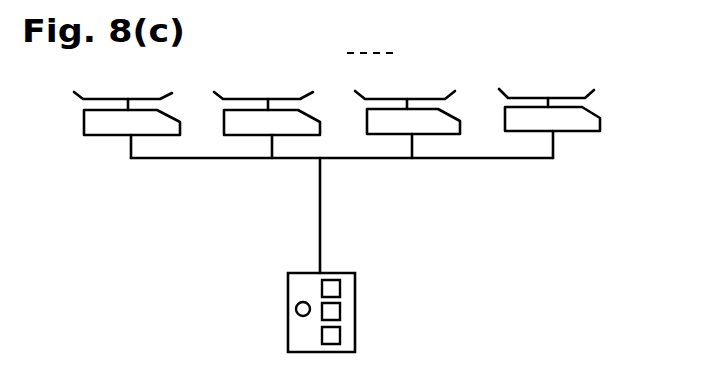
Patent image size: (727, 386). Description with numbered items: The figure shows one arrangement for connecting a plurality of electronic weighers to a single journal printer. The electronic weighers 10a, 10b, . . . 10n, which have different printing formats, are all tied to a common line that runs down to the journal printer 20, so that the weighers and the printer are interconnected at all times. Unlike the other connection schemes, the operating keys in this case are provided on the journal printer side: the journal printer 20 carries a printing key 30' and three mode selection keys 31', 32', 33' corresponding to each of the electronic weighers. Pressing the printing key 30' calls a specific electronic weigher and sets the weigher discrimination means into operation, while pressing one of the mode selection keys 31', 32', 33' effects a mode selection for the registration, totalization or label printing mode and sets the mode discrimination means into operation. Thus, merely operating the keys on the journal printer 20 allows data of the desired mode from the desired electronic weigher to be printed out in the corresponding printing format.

The electronic weigher 10a is at (143, 99).
The electronic weigher 10b is at (281, 99).
The electronic weigher 10n is at (532, 97).
The journal printer 20 is at (288, 283).
The printing key 30' is at (257, 333).
The mode selection key 31' is at (379, 278).
The mode selection key 32' is at (379, 303).
The mode selection key 33' is at (379, 330).